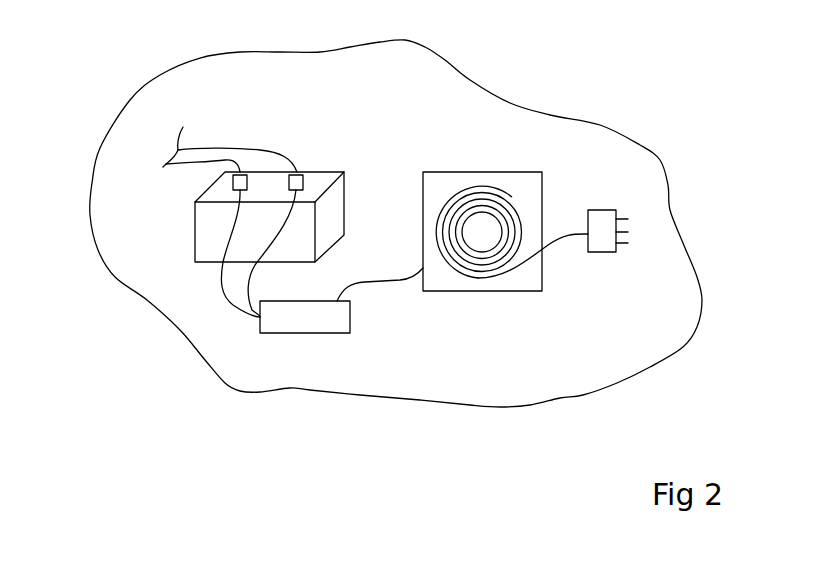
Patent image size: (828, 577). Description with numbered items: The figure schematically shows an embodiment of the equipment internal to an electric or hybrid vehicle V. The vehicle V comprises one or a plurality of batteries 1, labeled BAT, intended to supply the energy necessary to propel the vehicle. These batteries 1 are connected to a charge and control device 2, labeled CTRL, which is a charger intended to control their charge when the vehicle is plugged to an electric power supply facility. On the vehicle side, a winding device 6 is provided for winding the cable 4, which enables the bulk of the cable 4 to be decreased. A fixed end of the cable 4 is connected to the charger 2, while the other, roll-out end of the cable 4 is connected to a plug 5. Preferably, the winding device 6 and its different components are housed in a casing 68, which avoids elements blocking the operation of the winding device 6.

The vehicle V is at (92, 216).
The battery 1 is at (335, 203).
The charge and control device 2 is at (350, 318).
The cable 4 is at (512, 197).
The plug 5 is at (598, 252).
The winding device 6 is at (445, 172).
The casing 68 is at (507, 172).